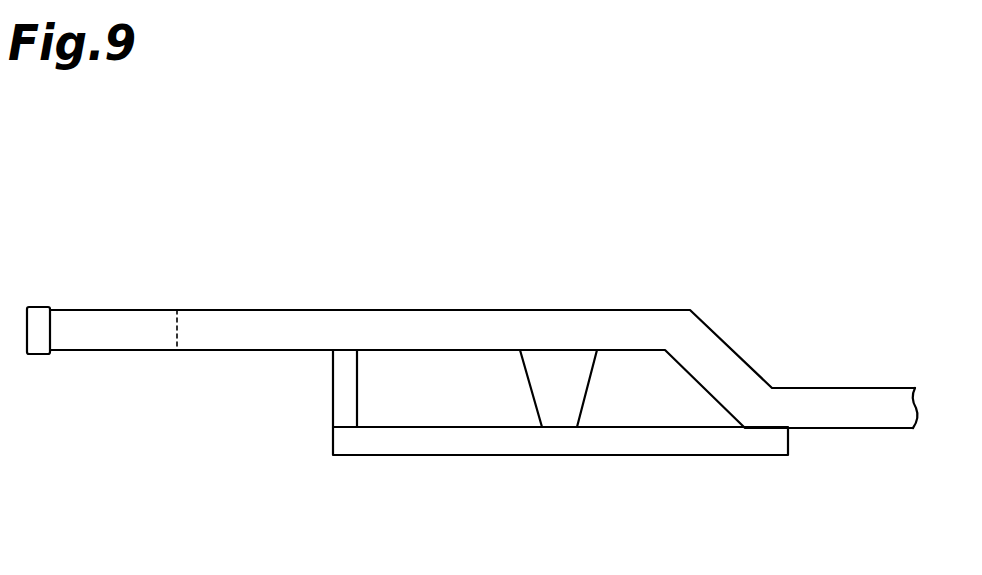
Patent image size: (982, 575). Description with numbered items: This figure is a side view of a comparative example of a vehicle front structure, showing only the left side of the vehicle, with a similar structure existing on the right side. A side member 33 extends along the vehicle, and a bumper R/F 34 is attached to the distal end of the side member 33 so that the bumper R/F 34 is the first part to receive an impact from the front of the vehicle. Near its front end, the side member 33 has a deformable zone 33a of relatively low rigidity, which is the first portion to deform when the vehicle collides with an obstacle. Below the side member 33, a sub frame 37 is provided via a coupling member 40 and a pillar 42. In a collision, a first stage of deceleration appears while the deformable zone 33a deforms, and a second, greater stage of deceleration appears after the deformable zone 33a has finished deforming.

The side member 33 is at (655, 310).
The deformable zone 33a is at (107, 320).
The bumper R/F 34 is at (37, 307).
The sub frame 37 is at (467, 455).
The coupling member 40 is at (583, 410).
The pillar 42 is at (358, 395).